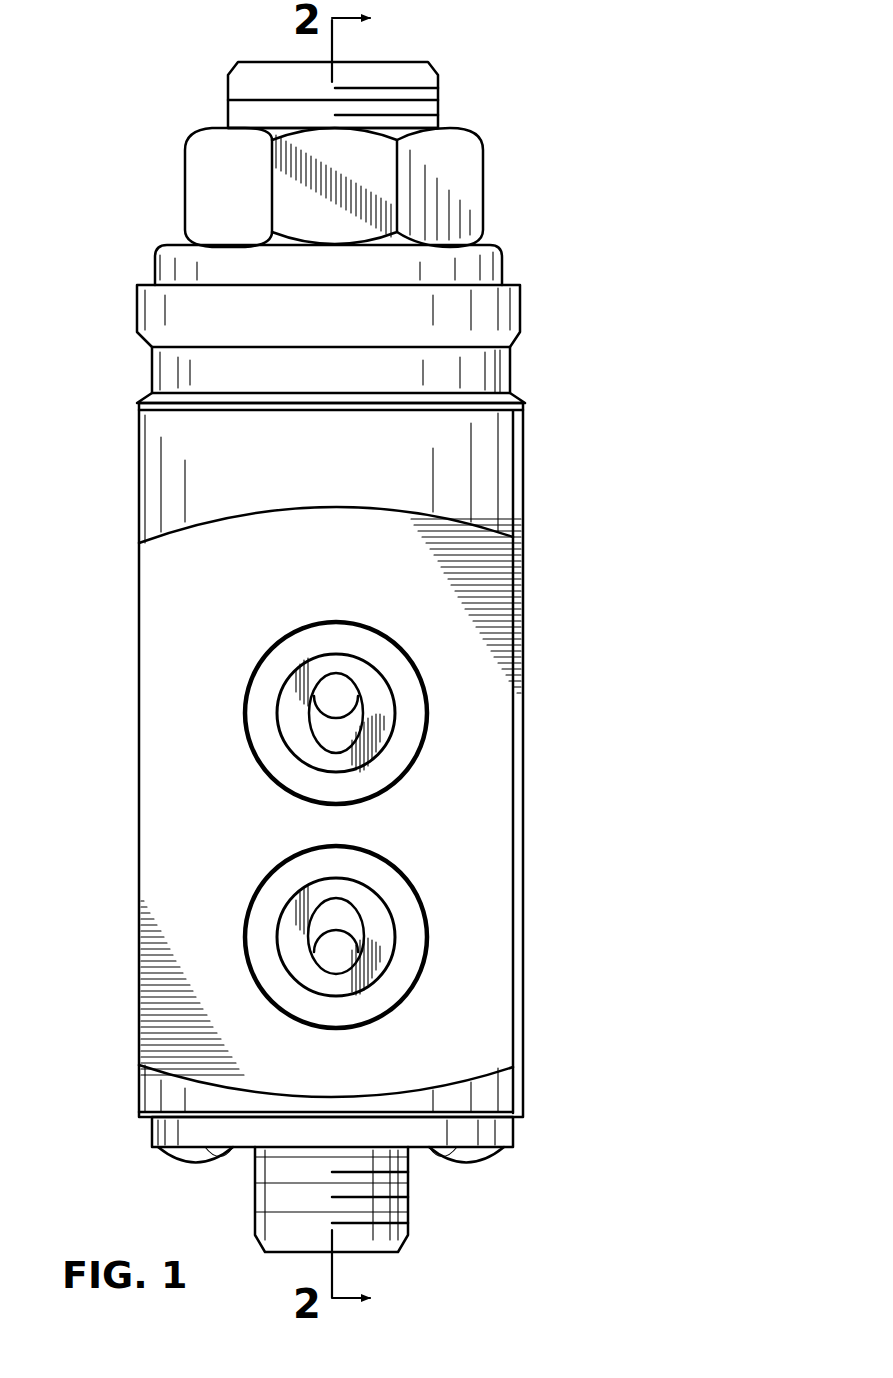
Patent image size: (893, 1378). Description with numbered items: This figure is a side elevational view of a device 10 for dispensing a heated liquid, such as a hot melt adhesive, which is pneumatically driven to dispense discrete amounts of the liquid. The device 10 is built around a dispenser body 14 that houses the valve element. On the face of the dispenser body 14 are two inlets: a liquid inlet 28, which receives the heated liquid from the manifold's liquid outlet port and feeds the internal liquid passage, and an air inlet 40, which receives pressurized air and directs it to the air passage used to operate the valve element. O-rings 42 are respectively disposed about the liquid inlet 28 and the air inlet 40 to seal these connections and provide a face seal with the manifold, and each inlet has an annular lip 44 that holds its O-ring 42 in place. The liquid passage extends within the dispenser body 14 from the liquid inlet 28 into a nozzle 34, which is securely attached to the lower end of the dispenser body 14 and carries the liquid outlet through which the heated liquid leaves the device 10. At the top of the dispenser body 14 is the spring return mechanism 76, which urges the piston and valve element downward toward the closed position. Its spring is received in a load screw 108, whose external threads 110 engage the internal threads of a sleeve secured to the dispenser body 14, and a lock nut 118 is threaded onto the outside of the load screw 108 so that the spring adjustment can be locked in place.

The device 10 is at (90, 261).
The dispenser body 14 is at (527, 726).
The liquid inlet 28 is at (338, 950).
The nozzle 34 is at (254, 1209).
The air inlet 40 is at (345, 728).
The O-rings 42 is at (382, 650).
The annular lips 44 is at (290, 718).
The spring return mechanism 76 is at (513, 282).
The load screw 108 is at (227, 107).
The external threads 110 is at (438, 80).
The lock nut 118 is at (483, 192).